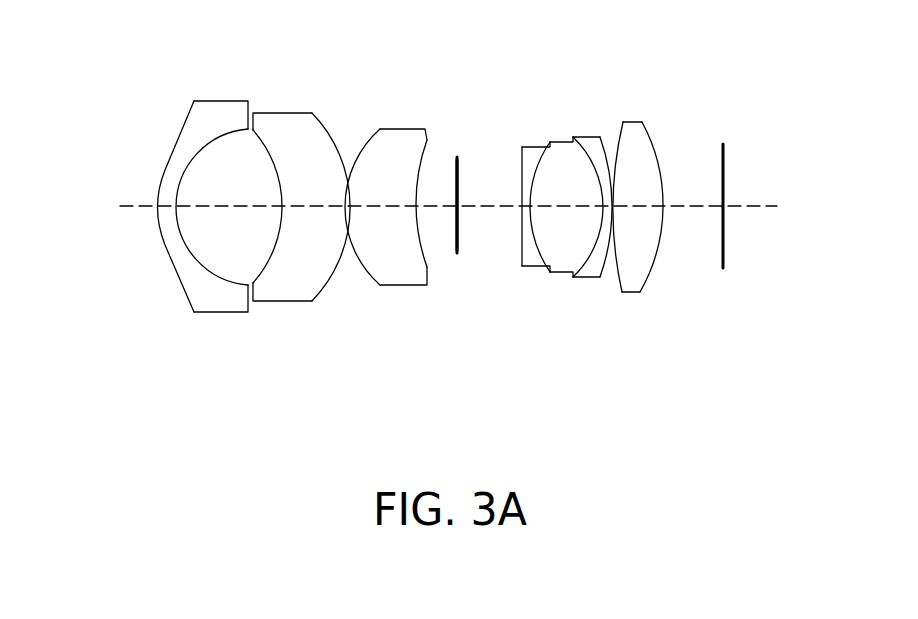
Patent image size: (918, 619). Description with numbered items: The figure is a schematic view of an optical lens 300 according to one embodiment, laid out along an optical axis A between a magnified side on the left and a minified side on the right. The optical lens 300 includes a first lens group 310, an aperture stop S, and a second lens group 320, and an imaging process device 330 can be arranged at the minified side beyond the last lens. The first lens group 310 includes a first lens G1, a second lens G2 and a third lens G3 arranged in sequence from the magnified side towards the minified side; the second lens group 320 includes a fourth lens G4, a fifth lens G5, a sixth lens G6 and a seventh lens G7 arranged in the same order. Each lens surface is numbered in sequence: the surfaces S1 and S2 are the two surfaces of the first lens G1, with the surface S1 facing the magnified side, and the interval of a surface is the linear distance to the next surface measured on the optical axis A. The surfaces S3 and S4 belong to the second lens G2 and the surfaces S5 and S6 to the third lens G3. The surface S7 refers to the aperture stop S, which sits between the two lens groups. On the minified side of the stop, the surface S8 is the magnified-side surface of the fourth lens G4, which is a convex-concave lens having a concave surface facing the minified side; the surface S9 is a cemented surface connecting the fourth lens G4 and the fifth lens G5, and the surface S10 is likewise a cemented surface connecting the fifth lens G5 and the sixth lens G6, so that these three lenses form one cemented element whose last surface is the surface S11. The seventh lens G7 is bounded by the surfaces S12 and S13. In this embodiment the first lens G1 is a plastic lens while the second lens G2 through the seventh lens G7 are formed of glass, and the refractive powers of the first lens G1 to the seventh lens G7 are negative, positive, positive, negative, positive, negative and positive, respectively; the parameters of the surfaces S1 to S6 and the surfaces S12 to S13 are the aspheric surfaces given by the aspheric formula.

The optical lens 300 is at (446, 226).
The first lens group 310 is at (294, 229).
The second lens group 320 is at (592, 215).
The imaging process device 330 is at (727, 257).
The optical axis A is at (130, 210).
The aperture stop S is at (462, 238).
The first lens G1 is at (203, 210).
The second lens G2 is at (301, 210).
The third lens G3 is at (387, 215).
The fourth lens G4 is at (520, 217).
The fifth lens G5 is at (569, 192).
The sixth lens G6 is at (592, 215).
The seventh lens G7 is at (654, 210).
The surface S1 is at (180, 130).
The surface S2 is at (218, 148).
The surface S3 is at (263, 166).
The surface S4 is at (334, 140).
The surface S5 is at (360, 147).
The surface S6 is at (422, 166).
The surface S7 is at (456, 183).
The surface S8 is at (521, 186).
The cemented surface S9 is at (540, 178).
The cemented surface S10 is at (578, 155).
The surface S11 is at (606, 160).
The surface S12 is at (616, 152).
The surface S13 is at (654, 150).